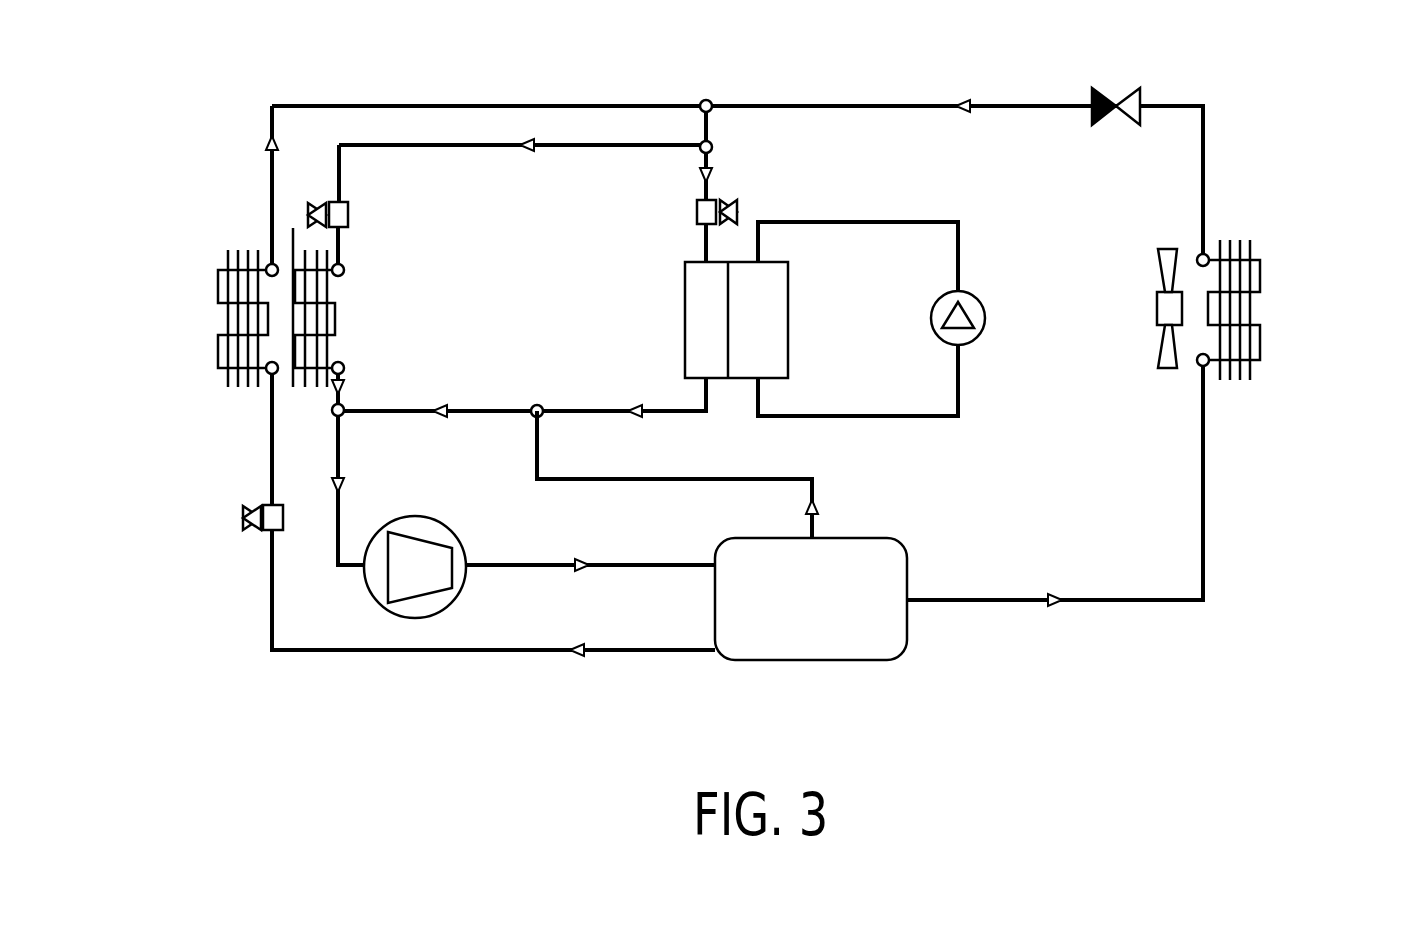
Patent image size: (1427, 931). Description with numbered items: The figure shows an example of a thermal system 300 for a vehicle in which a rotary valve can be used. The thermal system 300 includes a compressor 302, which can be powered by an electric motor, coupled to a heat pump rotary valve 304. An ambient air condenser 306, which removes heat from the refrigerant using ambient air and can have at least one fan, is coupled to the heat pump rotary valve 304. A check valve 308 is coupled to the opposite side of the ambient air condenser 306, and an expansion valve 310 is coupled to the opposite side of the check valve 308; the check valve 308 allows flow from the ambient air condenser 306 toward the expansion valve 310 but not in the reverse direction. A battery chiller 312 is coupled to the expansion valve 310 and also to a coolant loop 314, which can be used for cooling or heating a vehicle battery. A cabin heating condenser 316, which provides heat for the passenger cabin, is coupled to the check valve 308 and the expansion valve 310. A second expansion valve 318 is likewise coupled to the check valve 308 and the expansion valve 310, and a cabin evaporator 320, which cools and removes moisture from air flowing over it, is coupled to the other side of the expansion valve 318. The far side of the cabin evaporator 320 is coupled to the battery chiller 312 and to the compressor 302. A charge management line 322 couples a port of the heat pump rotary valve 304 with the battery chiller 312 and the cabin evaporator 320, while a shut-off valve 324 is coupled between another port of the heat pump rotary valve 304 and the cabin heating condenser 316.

The thermal system 300 is at (727, 46).
The compressor 302 is at (463, 545).
The heat pump rotary valve 304 is at (900, 540).
The ambient air condenser 306 is at (1252, 250).
The check valve 308 is at (1140, 100).
The expansion valve 310 is at (697, 210).
The battery chiller 312 is at (685, 297).
The coolant loop 314 is at (947, 222).
The cabin heating condenser 316 is at (228, 252).
The expansion valve 318 is at (316, 200).
The cabin evaporator 320 is at (337, 312).
The charge management line 322 is at (700, 481).
The shut-off valve 324 is at (250, 528).